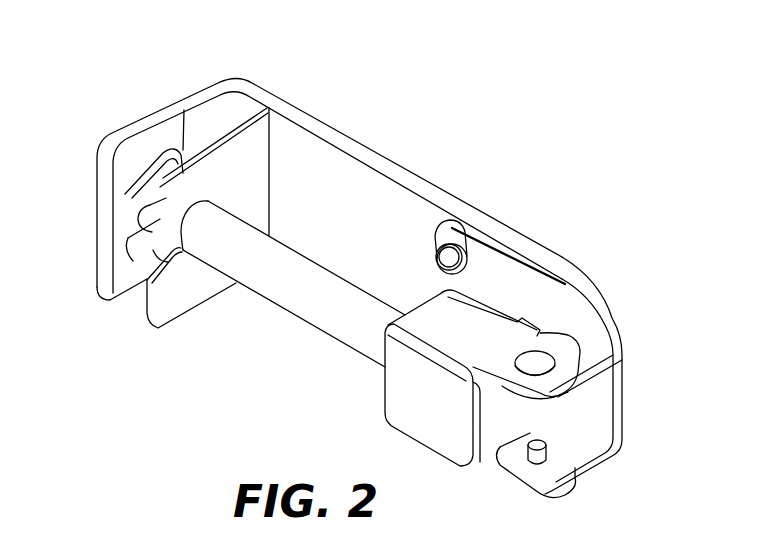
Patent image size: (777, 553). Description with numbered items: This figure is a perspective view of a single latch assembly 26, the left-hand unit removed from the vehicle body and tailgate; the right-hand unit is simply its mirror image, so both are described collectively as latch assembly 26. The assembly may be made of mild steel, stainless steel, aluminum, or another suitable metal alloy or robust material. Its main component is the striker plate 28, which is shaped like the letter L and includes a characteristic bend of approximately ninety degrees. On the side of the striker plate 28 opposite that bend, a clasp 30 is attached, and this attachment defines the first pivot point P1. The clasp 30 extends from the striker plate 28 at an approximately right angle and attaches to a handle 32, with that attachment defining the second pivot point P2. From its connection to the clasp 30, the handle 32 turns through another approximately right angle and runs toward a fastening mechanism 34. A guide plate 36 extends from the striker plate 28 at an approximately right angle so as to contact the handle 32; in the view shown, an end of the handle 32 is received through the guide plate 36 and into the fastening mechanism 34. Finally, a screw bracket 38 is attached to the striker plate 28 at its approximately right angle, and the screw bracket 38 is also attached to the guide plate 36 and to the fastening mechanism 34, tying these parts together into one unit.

The latch assembly 26 is at (424, 124).
The striker plate 28 is at (482, 221).
The clasp 30 is at (614, 350).
The handle 32 is at (303, 326).
The fastening mechanism 34 is at (137, 190).
The guide plate 36 is at (177, 298).
The screw bracket 38 is at (218, 107).
The first pivot point P1 is at (432, 262).
The second pivot point P2 is at (536, 360).